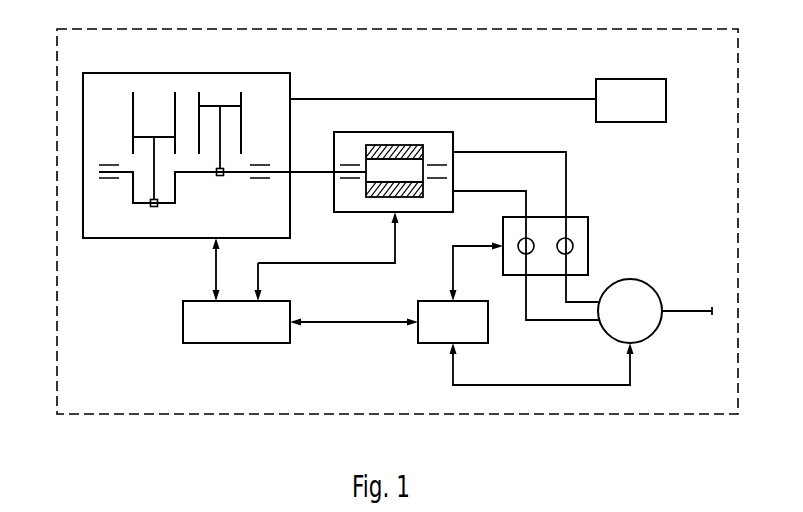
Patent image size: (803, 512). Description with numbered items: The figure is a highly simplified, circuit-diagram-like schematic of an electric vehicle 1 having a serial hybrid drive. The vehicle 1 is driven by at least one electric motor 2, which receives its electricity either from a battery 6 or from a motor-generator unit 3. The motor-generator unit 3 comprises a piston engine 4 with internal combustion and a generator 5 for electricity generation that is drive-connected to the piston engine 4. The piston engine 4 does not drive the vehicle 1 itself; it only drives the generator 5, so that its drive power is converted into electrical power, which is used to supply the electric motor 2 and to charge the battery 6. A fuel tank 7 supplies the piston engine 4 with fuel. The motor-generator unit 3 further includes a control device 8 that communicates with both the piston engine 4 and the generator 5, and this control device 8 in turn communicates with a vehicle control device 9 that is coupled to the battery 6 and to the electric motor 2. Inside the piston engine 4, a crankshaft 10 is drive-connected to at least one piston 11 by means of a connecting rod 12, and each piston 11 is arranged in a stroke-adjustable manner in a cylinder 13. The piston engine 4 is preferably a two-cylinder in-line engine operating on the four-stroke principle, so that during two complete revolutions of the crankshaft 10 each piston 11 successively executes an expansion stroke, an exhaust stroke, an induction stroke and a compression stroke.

The electric vehicle 1 is at (566, 18).
The electric motor 2 is at (624, 323).
The motor-generator unit 3 is at (149, 306).
The piston engine 4 is at (73, 153).
The generator 5 is at (394, 122).
The battery 6 is at (600, 246).
The fuel tank 7 is at (625, 112).
The control device 8 is at (231, 333).
The vehicle control device 9 is at (447, 333).
The crankshaft 10 is at (195, 186).
The piston 11 is at (145, 135).
The connecting rod 12 is at (153, 184).
The cylinder 13 is at (175, 91).